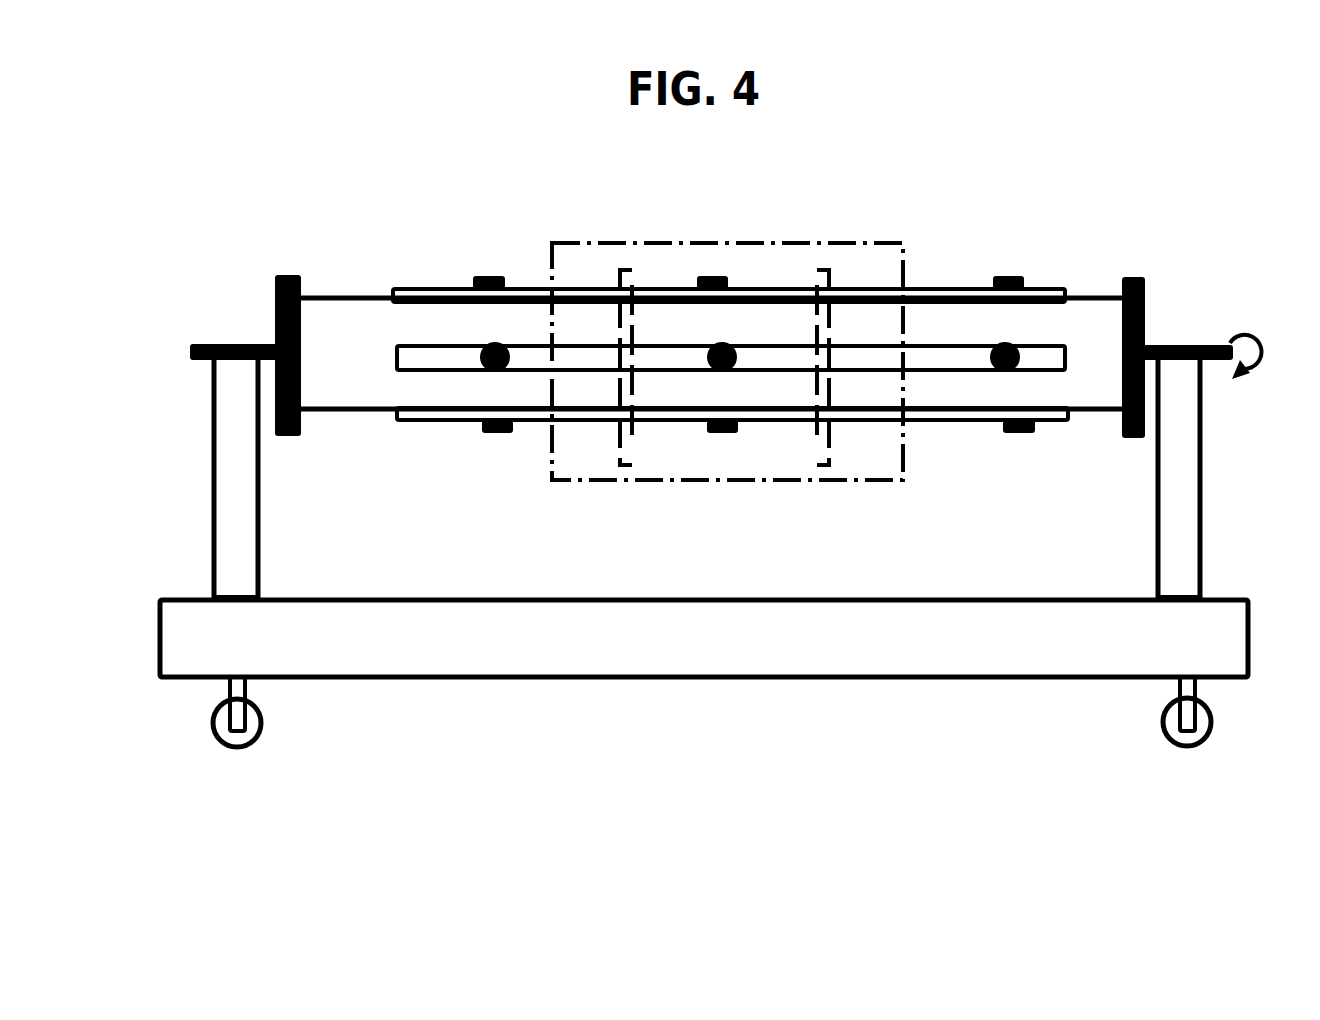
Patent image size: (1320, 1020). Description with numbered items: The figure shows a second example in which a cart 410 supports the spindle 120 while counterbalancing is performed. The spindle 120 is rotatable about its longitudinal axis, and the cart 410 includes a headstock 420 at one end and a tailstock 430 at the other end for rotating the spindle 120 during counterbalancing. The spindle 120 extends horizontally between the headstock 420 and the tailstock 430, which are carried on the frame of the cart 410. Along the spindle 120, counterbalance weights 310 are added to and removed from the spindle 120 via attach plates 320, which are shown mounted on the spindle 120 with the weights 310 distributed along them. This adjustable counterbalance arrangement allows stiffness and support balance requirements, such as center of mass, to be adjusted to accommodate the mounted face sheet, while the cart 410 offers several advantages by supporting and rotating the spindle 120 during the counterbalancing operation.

The spindle 120 is at (1098, 305).
The counterbalance weights 310 is at (493, 433).
The attach plates 320 is at (422, 420).
The cart 410 is at (782, 684).
The headstock 420 is at (290, 275).
The tailstock 430 is at (1135, 277).